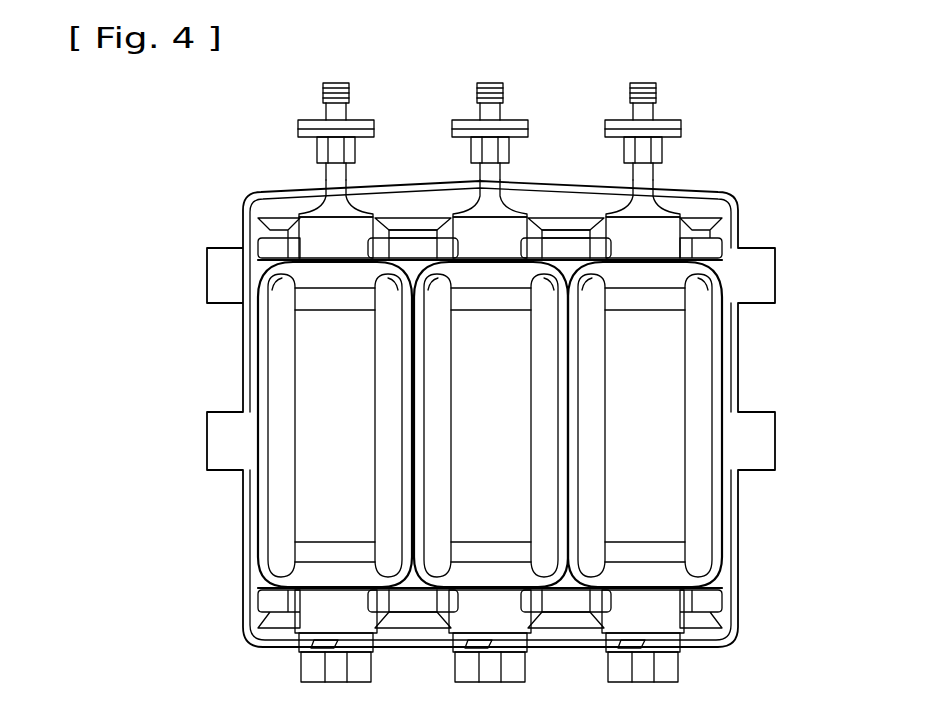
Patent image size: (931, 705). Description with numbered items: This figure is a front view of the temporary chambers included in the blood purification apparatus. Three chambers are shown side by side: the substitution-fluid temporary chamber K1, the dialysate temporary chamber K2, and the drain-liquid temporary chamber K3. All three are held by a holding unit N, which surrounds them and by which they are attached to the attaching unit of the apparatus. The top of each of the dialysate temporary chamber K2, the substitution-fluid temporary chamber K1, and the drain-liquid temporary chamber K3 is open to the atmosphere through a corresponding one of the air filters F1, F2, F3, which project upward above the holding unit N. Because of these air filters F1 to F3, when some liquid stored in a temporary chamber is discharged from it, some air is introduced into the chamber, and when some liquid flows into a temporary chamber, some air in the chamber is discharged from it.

The holding unit N is at (722, 205).
The air filter F1 is at (297, 128).
The air filter F2 is at (681, 128).
The air filter F3 is at (529, 128).
The substitution-fluid temporary chamber K1 is at (283, 366).
The dialysate temporary chamber K2 is at (700, 358).
The drain-liquid temporary chamber K3 is at (520, 508).